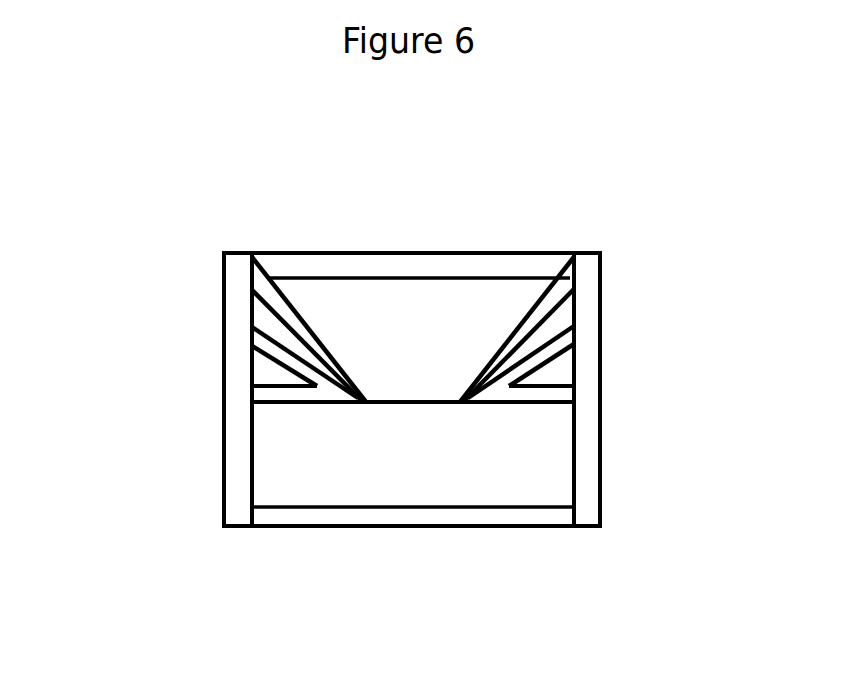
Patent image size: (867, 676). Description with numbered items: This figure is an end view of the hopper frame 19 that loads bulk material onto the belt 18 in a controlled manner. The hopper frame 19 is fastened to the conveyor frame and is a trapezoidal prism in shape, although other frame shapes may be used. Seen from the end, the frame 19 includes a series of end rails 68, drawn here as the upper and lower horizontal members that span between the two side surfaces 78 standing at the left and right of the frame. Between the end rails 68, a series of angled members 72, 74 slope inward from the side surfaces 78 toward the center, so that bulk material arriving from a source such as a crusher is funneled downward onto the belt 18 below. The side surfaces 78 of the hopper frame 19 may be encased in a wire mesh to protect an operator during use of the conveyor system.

The belt 18 is at (413, 481).
The hopper frame 19 is at (637, 472).
The end rails 68 is at (513, 250).
The angled members 72 is at (292, 302).
The angled members 74 is at (315, 362).
The side surfaces 78 is at (198, 358).